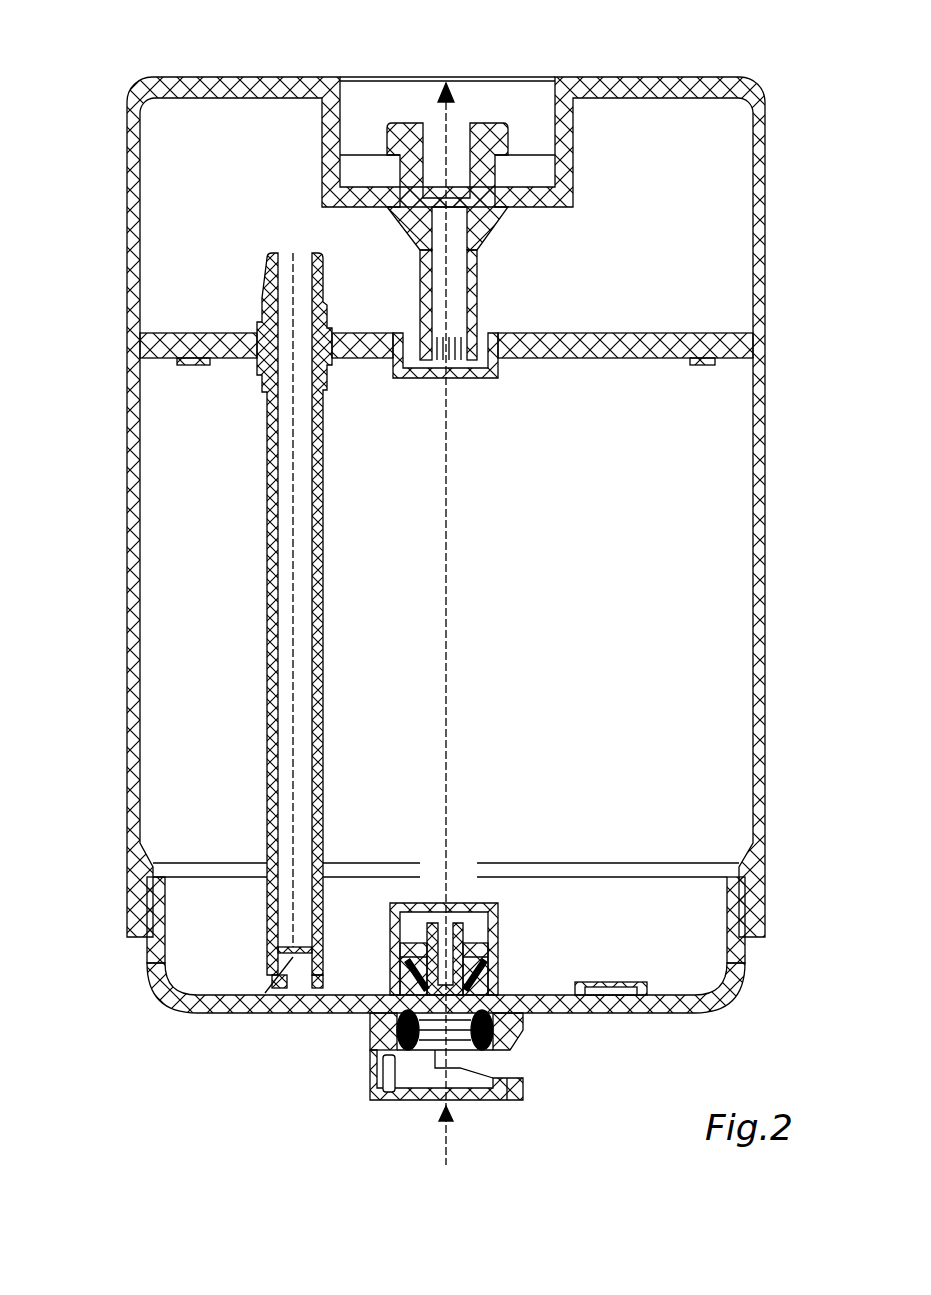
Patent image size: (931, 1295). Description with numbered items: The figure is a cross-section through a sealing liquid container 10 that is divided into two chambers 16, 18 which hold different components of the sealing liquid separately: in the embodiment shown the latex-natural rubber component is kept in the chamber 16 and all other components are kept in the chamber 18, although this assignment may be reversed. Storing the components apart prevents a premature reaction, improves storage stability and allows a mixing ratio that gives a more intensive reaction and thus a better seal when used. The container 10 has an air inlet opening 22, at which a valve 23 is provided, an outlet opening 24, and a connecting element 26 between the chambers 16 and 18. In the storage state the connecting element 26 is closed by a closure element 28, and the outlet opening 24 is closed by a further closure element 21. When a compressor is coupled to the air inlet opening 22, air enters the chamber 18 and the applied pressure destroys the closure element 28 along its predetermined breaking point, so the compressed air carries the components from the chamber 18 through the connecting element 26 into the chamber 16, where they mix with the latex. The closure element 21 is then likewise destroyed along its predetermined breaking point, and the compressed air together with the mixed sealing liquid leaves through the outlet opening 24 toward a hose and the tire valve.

The sealing liquid container 10 is at (435, 594).
The chamber 16 is at (735, 235).
The chamber 18 is at (725, 555).
The closure element 21 is at (447, 207).
The air inlet opening 22 is at (505, 1040).
The valve 23 is at (400, 1005).
The outlet opening 24 is at (492, 130).
The connecting element 26 is at (287, 733).
The closure element 28 is at (245, 1013).